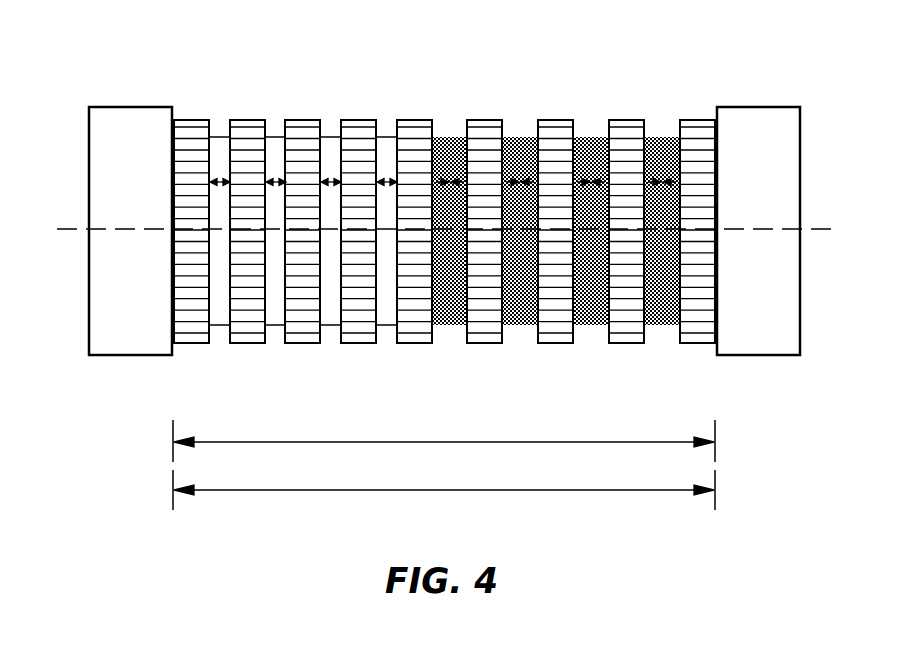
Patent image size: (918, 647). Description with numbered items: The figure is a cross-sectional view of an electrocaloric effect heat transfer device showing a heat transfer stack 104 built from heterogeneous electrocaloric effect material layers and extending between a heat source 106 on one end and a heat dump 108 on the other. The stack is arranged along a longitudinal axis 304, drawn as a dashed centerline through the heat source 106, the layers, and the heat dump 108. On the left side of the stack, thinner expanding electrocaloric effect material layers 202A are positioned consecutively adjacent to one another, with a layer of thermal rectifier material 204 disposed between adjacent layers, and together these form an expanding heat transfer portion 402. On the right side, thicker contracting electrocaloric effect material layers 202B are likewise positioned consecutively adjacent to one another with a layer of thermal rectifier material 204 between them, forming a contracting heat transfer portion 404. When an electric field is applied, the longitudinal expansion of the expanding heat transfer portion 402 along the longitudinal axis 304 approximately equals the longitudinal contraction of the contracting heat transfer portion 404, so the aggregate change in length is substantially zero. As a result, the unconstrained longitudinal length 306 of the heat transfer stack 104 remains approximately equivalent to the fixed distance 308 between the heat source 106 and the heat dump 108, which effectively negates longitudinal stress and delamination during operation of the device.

The heat transfer stack 104 is at (745, 59).
The heat source 106 is at (109, 188).
The heat dump 108 is at (780, 186).
The expanding electrocaloric effect material layers 202A is at (332, 145).
The contracting electrocaloric effect material layers 202B is at (672, 147).
The thermal rectifier material layer 204 is at (557, 128).
The longitudinal axis 304 is at (73, 232).
The unconstrained longitudinal length 306 is at (464, 511).
The fixed distance 308 is at (555, 438).
The expanding heat transfer portion 402 is at (397, 355).
The contracting heat transfer portion 404 is at (682, 355).